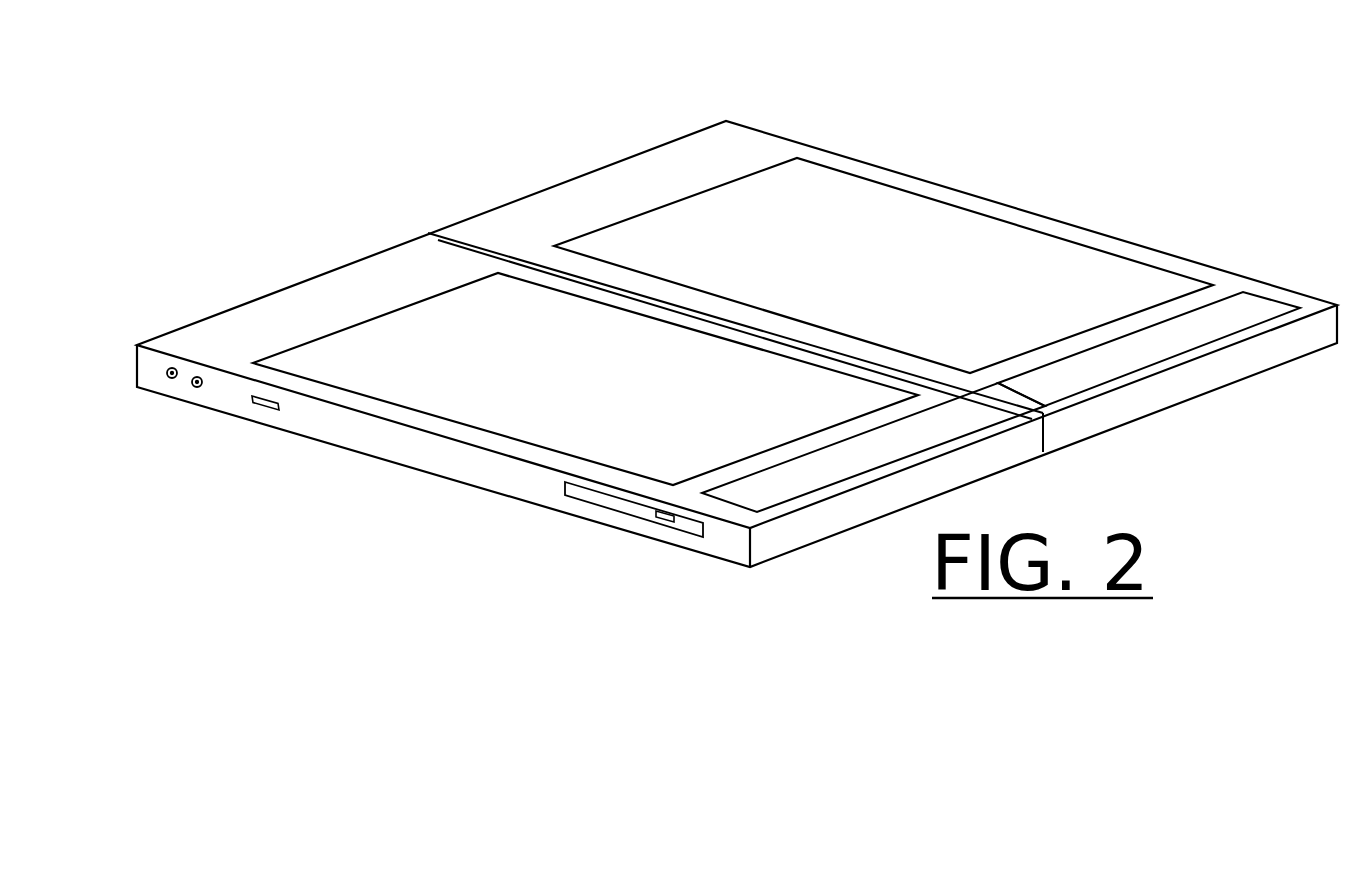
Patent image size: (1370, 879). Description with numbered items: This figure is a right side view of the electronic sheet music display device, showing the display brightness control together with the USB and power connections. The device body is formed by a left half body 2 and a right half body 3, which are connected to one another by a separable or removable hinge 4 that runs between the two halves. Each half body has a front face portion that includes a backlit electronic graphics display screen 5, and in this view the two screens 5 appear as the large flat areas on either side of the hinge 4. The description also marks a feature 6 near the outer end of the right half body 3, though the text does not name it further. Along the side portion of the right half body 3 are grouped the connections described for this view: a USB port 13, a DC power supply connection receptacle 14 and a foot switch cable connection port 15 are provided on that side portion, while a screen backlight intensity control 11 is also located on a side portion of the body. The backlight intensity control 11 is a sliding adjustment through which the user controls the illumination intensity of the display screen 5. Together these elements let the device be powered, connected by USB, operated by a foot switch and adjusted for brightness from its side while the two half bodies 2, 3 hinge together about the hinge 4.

The left half body 2 is at (703, 147).
The right half body 3 is at (220, 330).
The hinge 4 is at (437, 232).
The backlit electronic graphics display screen 5 is at (568, 362).
The slot 6 is at (943, 423).
The backlight intensity control 11 is at (657, 515).
The USB port 13 is at (262, 405).
The DC power supply connection receptacle 14 is at (193, 383).
The foot switch cable connection port 15 is at (165, 376).